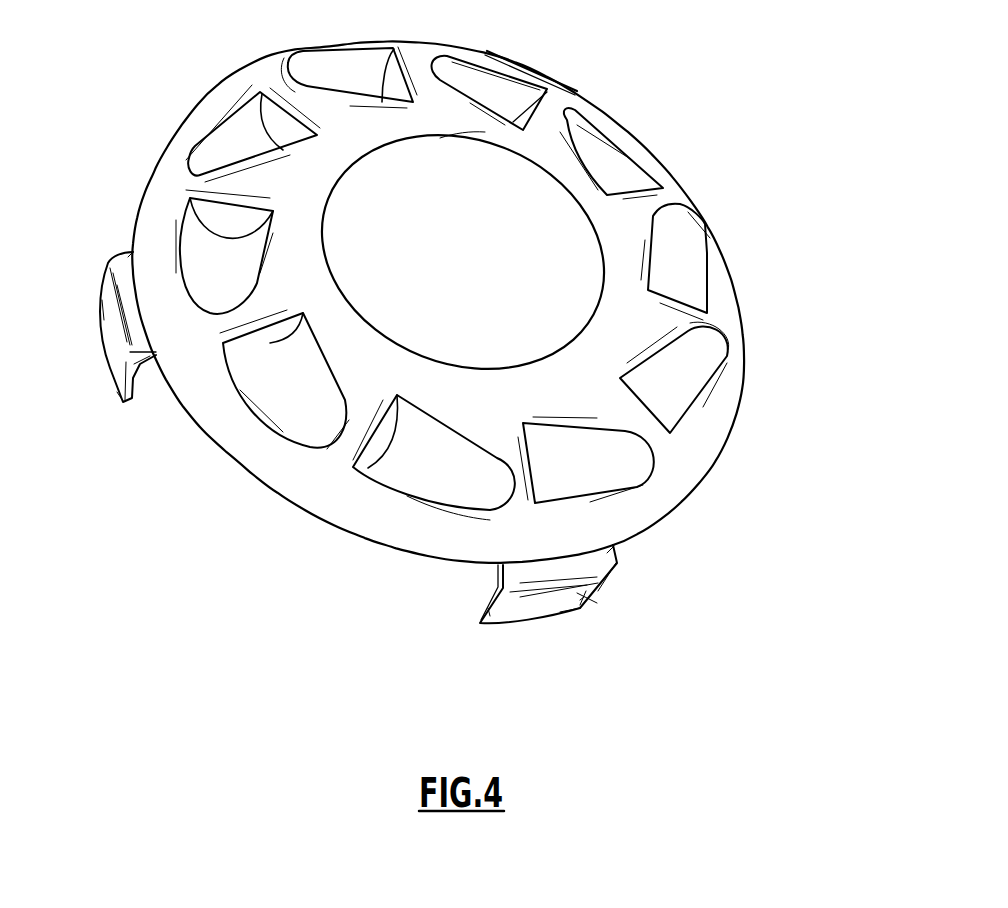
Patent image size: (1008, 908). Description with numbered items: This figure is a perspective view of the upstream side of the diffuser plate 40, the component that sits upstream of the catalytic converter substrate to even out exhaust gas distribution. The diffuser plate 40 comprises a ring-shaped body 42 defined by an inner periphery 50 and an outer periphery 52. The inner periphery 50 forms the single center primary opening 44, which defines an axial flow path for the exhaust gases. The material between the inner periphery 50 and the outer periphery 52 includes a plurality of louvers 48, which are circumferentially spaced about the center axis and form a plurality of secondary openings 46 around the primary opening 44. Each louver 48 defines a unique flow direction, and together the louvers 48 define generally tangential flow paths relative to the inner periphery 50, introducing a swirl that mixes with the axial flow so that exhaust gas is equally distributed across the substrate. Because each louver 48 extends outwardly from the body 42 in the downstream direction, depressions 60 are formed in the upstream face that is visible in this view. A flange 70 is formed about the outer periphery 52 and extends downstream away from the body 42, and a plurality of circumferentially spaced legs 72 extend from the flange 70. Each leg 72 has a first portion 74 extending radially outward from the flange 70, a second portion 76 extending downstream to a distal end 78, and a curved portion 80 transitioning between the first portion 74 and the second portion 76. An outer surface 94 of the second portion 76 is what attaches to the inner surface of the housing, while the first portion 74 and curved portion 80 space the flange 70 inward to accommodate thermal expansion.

The diffuser plate 40 is at (803, 150).
The ring-shaped body 42 is at (640, 220).
The primary opening 44 is at (381, 183).
The secondary openings 46 is at (285, 322).
The louvers 48 is at (240, 138).
The inner periphery 50 is at (483, 146).
The outer periphery 52 is at (702, 480).
The depressions 60 is at (437, 463).
The flange 70 is at (741, 406).
The legs 72 is at (117, 357).
The first portion 74 is at (125, 260).
The second portion 76 is at (107, 313).
The distal end 78 is at (125, 402).
The curved portion 80 is at (150, 357).
The outer surface 94 is at (587, 598).